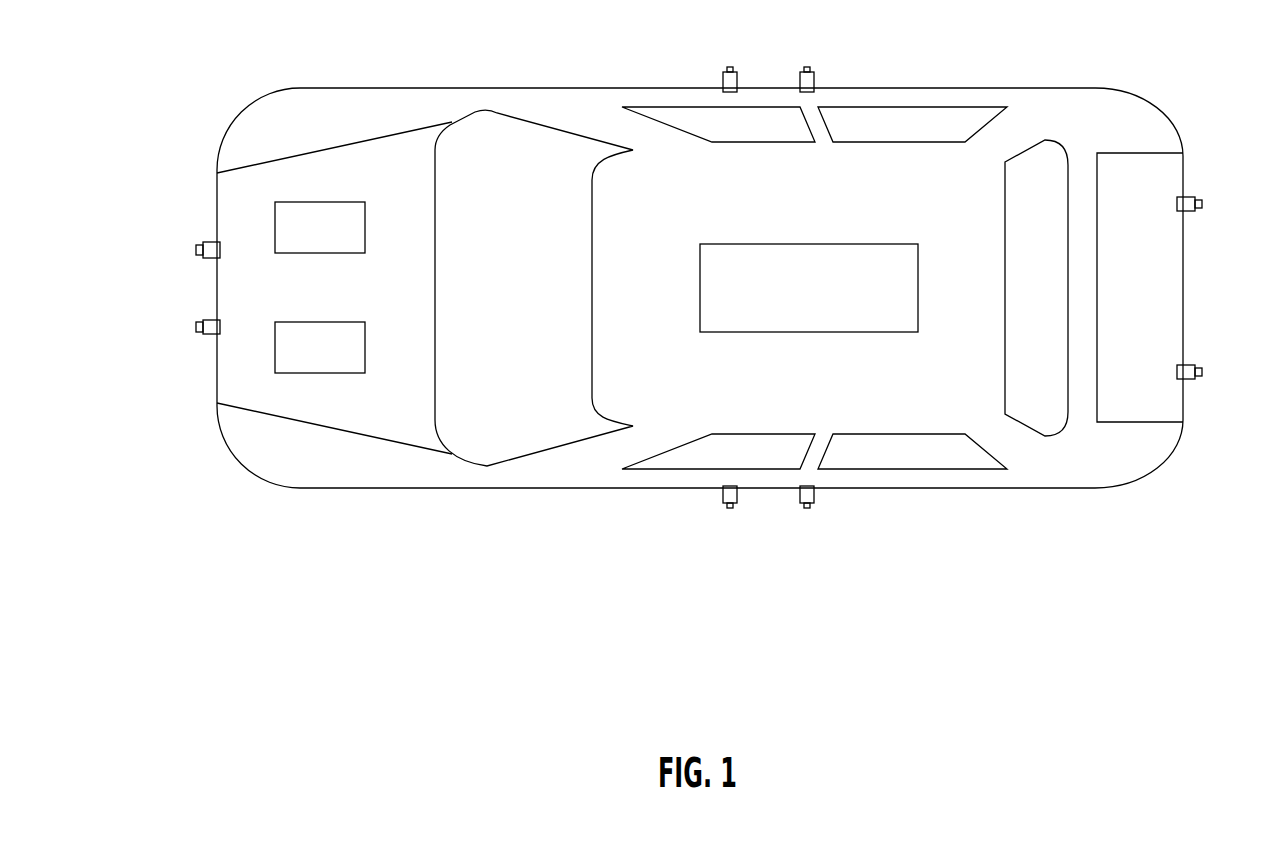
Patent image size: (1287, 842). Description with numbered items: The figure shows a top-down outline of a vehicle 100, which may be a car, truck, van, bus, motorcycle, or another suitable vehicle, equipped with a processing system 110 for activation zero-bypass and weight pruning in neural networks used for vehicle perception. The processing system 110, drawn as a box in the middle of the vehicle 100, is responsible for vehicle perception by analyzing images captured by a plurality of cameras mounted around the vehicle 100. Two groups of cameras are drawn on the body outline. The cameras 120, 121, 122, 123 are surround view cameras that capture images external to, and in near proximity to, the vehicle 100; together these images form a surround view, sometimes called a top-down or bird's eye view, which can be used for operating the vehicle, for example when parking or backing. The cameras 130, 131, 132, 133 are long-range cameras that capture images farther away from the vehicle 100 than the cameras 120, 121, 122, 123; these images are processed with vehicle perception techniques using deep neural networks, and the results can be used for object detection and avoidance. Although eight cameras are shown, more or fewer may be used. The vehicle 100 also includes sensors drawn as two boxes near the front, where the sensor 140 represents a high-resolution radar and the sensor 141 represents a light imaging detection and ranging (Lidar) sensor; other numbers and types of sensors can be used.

The vehicle 100 is at (1008, 88).
The processing system 110 is at (832, 301).
The camera 120 is at (195, 250).
The camera 121 is at (729, 509).
The camera 122 is at (730, 66).
The camera 123 is at (1203, 204).
The camera 130 is at (195, 327).
The camera 131 is at (807, 509).
The camera 132 is at (806, 66).
The camera 133 is at (1203, 372).
The sensor 140 is at (342, 241).
The sensor 141 is at (342, 361).